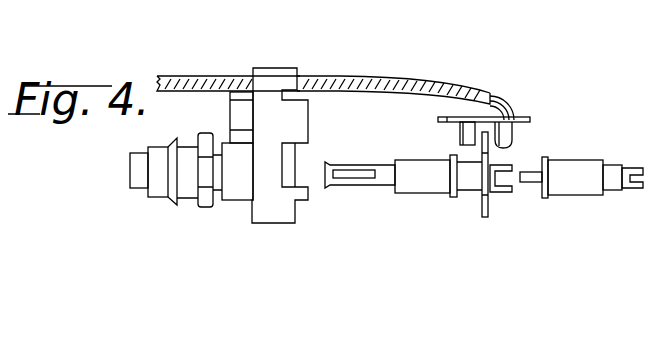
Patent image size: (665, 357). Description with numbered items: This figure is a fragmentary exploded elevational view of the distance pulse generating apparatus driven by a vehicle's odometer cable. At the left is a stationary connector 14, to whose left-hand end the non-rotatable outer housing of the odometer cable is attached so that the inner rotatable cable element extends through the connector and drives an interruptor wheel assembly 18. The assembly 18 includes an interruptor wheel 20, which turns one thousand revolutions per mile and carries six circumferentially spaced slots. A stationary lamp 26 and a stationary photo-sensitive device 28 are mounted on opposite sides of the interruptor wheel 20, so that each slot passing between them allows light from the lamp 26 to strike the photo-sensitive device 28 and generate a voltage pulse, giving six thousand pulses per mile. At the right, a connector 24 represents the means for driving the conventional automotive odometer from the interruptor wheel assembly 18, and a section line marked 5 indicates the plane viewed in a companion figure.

The section line 5- 5 is at (490, 237).
The stationary connector 14 is at (205, 229).
The interruptor wheel assembly 18 is at (376, 195).
The interruptor wheel 20 is at (480, 208).
The connector 24 is at (583, 173).
The stationary lamp 26 is at (507, 143).
The stationary photo-sensitive device 28 is at (455, 131).